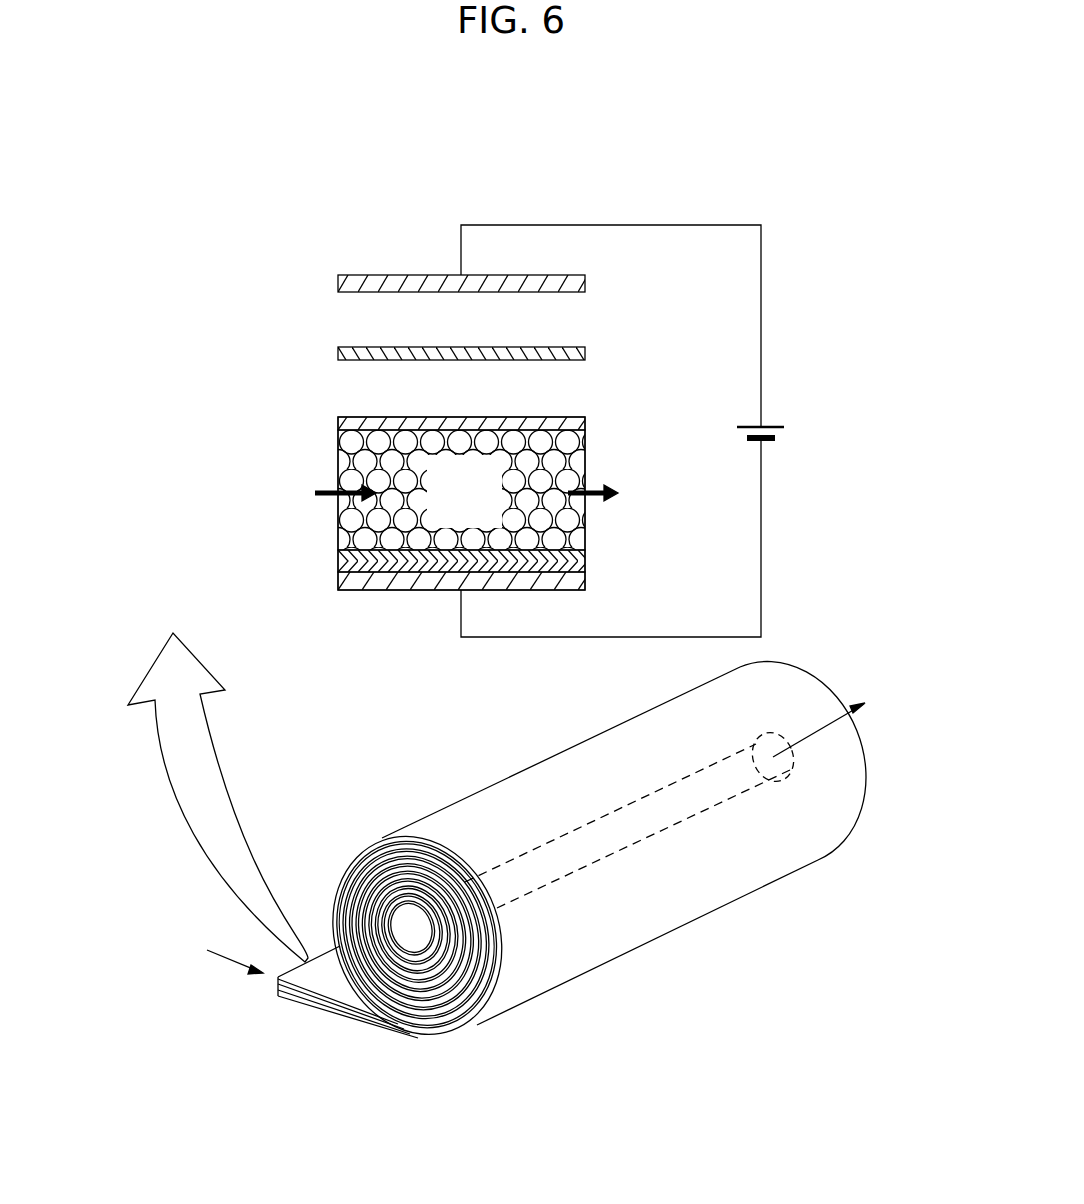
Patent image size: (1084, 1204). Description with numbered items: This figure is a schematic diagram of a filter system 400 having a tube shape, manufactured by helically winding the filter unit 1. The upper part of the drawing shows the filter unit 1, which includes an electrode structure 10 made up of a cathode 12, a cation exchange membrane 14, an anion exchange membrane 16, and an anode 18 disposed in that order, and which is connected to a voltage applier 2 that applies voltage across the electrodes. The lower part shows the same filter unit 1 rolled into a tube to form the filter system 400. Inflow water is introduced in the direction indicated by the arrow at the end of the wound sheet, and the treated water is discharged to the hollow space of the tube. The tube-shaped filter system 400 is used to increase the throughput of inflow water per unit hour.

The filter system 400 is at (497, 135).
The filter unit 1 is at (403, 257).
The voltage applier 2 is at (771, 425).
The electrode structure 10 is at (190, 278).
The cathode 12 is at (338, 558).
The cation exchange membrane 14 is at (338, 418).
The anion exchange membrane 16 is at (338, 348).
The anode 18 is at (338, 278).